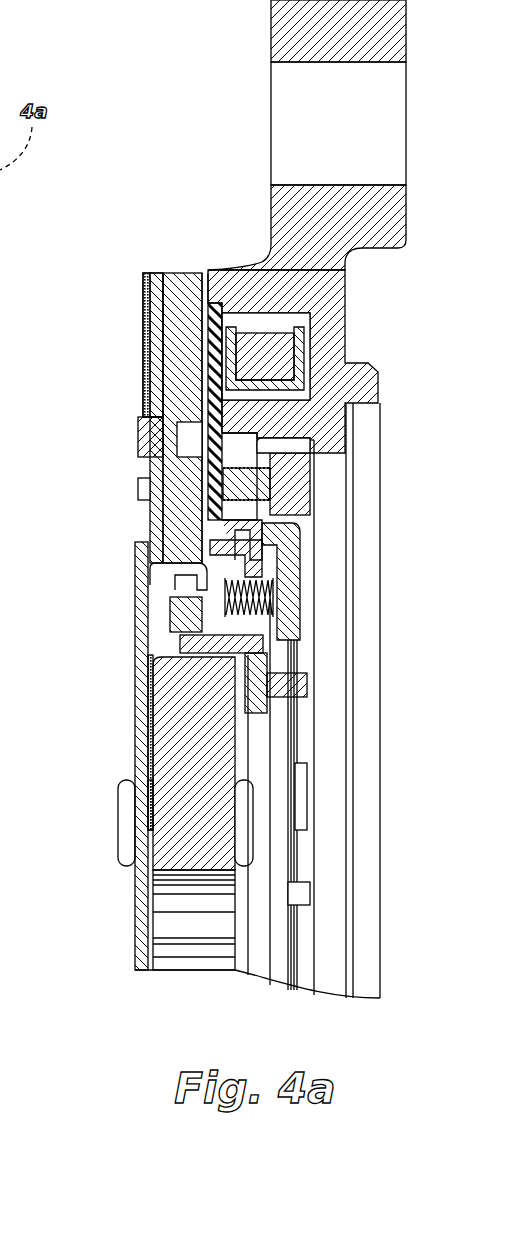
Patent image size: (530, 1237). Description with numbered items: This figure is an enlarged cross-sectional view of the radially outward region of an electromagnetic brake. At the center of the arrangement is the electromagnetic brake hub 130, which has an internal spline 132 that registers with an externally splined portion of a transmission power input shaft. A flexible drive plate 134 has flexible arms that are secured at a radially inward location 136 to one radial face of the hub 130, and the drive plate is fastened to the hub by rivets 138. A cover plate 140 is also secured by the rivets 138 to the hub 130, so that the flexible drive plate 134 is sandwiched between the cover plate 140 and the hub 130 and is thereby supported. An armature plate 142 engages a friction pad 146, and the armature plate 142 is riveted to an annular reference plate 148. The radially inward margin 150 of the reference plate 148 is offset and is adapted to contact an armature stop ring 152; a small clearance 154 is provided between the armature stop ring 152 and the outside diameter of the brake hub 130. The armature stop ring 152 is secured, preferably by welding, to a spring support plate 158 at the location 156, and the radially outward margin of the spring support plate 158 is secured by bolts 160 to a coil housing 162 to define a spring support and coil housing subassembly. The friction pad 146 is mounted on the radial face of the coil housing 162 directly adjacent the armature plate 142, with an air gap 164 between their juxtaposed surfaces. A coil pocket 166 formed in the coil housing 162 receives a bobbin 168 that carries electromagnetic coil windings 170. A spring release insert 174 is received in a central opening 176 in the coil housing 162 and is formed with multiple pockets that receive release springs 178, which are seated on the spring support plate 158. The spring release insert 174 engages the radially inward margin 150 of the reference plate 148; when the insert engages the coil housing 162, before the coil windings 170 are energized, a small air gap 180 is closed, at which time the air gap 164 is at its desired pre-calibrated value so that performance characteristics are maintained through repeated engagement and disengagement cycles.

The electromagnetic brake hub 130 is at (183, 742).
The internal spline 132 is at (197, 873).
The flexible drive plate 134 is at (148, 375).
The radially inward securing location 136 is at (148, 803).
The rivets 138 is at (128, 855).
The cover plate 140 is at (140, 615).
The armature plate 142 is at (182, 295).
The friction pad 146 is at (175, 315).
The annular reference plate 148 is at (155, 353).
The radially inward margin of the reference plate 150 is at (172, 577).
The armature stop ring 152 is at (182, 642).
The clearance 154 is at (150, 688).
The weld securing armature stop to spring support plate 156 is at (300, 672).
The spring support plate 158 is at (288, 582).
The bolts 160 is at (290, 447).
The coil housing 162 is at (338, 208).
The air gap 164 is at (203, 272).
The coil pocket 166 is at (307, 310).
The bobbin 168 is at (312, 362).
The electromagnetic coil windings 170 is at (263, 358).
The spring release insert 174 is at (212, 618).
The central opening 176 is at (168, 518).
The release springs 178 is at (263, 597).
The small air gap 180 is at (187, 614).